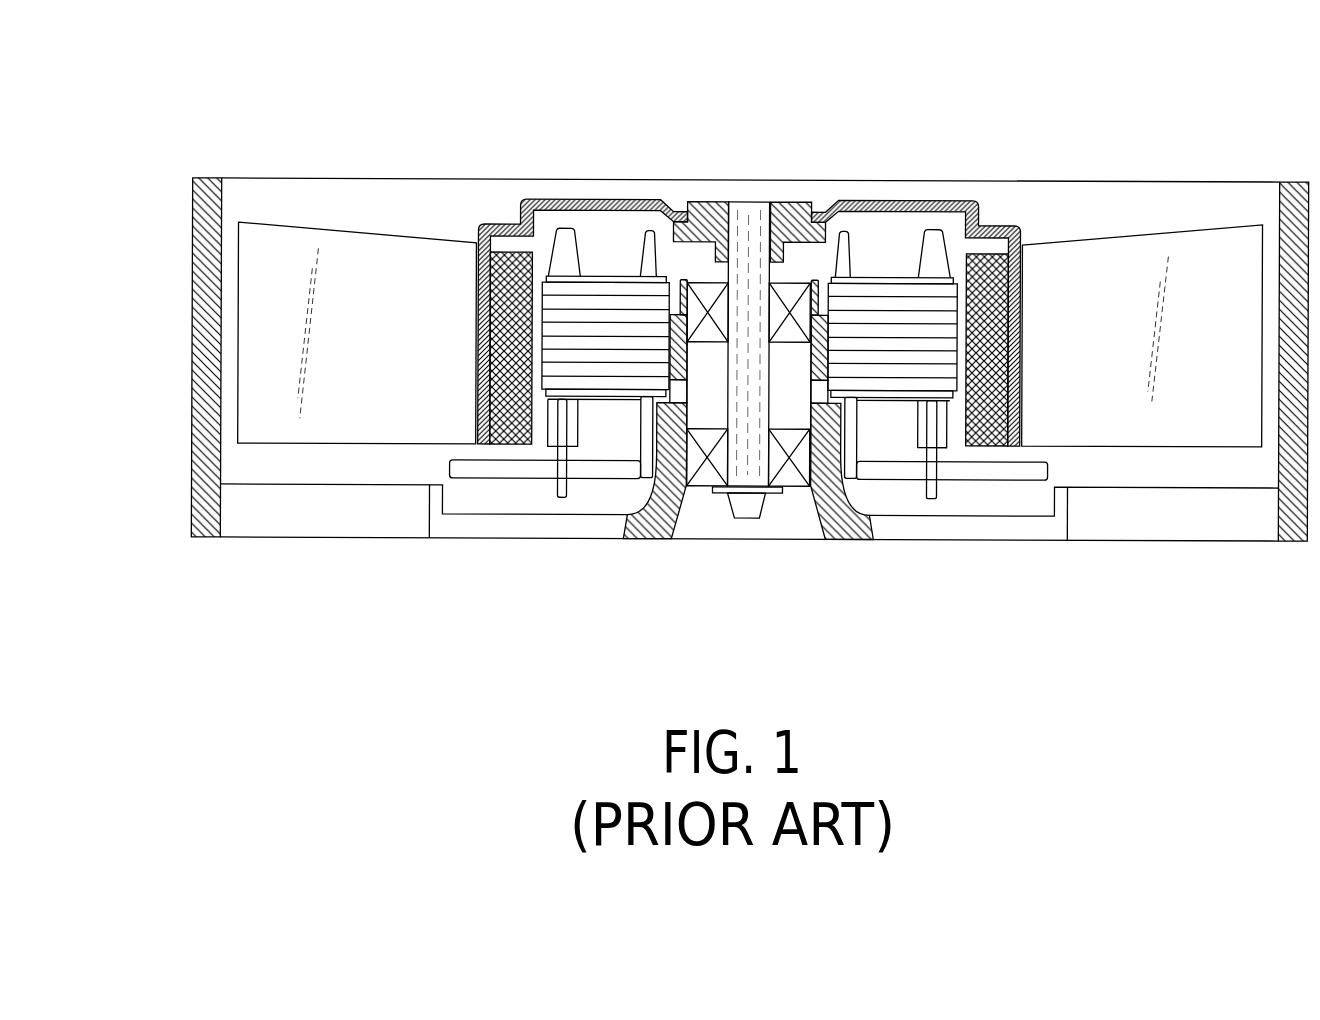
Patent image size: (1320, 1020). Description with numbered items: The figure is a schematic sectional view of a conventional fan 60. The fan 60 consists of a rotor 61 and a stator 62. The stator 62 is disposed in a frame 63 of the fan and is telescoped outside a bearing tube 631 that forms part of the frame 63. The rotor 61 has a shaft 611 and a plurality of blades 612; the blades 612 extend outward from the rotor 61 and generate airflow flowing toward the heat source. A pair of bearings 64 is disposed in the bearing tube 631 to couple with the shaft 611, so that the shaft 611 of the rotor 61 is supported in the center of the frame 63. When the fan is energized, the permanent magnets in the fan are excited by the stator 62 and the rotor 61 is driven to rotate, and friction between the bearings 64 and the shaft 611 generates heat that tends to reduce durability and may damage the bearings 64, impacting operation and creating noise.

The fan 60 is at (1280, 78).
The rotor 61 is at (496, 215).
The shaft 611 is at (744, 258).
The blades 612 is at (353, 300).
The stator 62 is at (860, 270).
The frame 63 is at (203, 420).
The bearing tube 631 is at (628, 515).
The bearing 64 is at (788, 480).